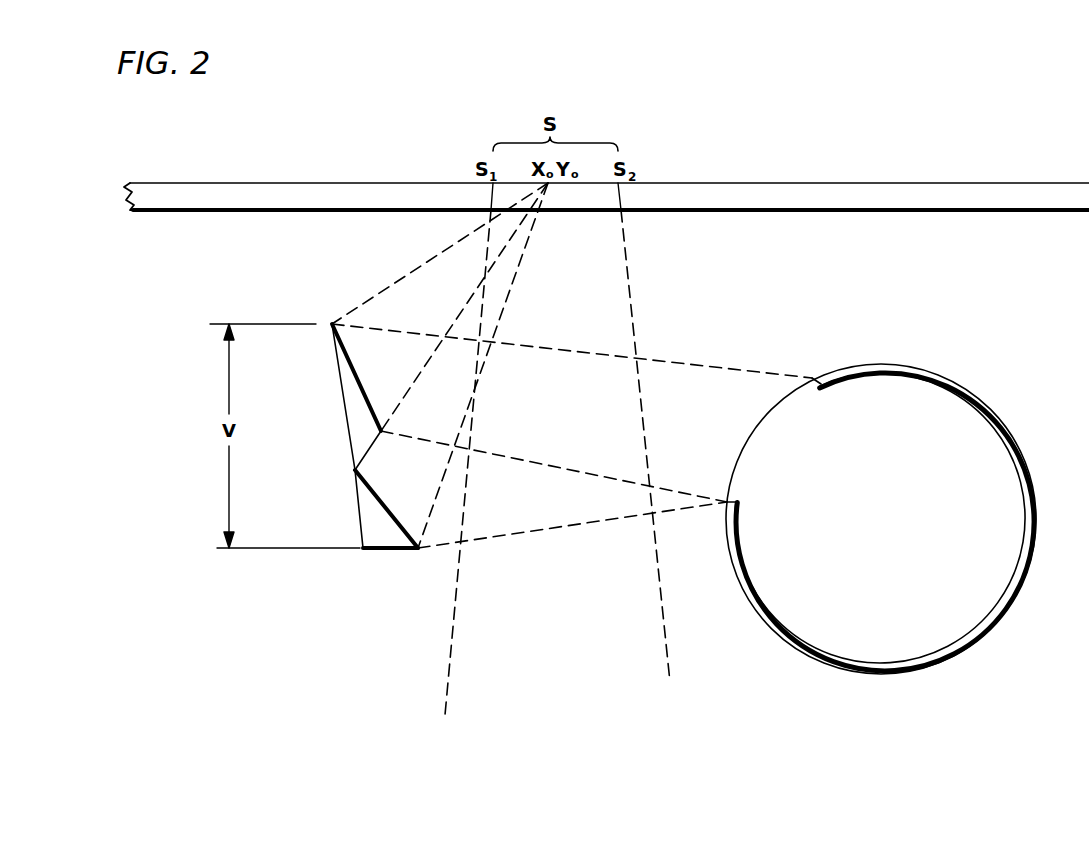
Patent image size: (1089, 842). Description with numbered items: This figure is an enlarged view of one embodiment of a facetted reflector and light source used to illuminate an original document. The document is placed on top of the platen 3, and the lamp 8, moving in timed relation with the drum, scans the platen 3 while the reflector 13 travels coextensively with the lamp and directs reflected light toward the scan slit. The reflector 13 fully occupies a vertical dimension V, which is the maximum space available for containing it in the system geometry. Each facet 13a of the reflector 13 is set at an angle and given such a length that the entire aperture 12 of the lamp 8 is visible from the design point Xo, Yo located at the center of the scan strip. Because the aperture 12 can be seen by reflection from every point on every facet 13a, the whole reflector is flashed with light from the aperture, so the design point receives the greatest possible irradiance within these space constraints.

The platen 3 is at (690, 183).
The lamp 8 is at (881, 502).
The aperture 12 is at (783, 398).
The reflector 13 is at (354, 436).
The facet 13a is at (363, 392).